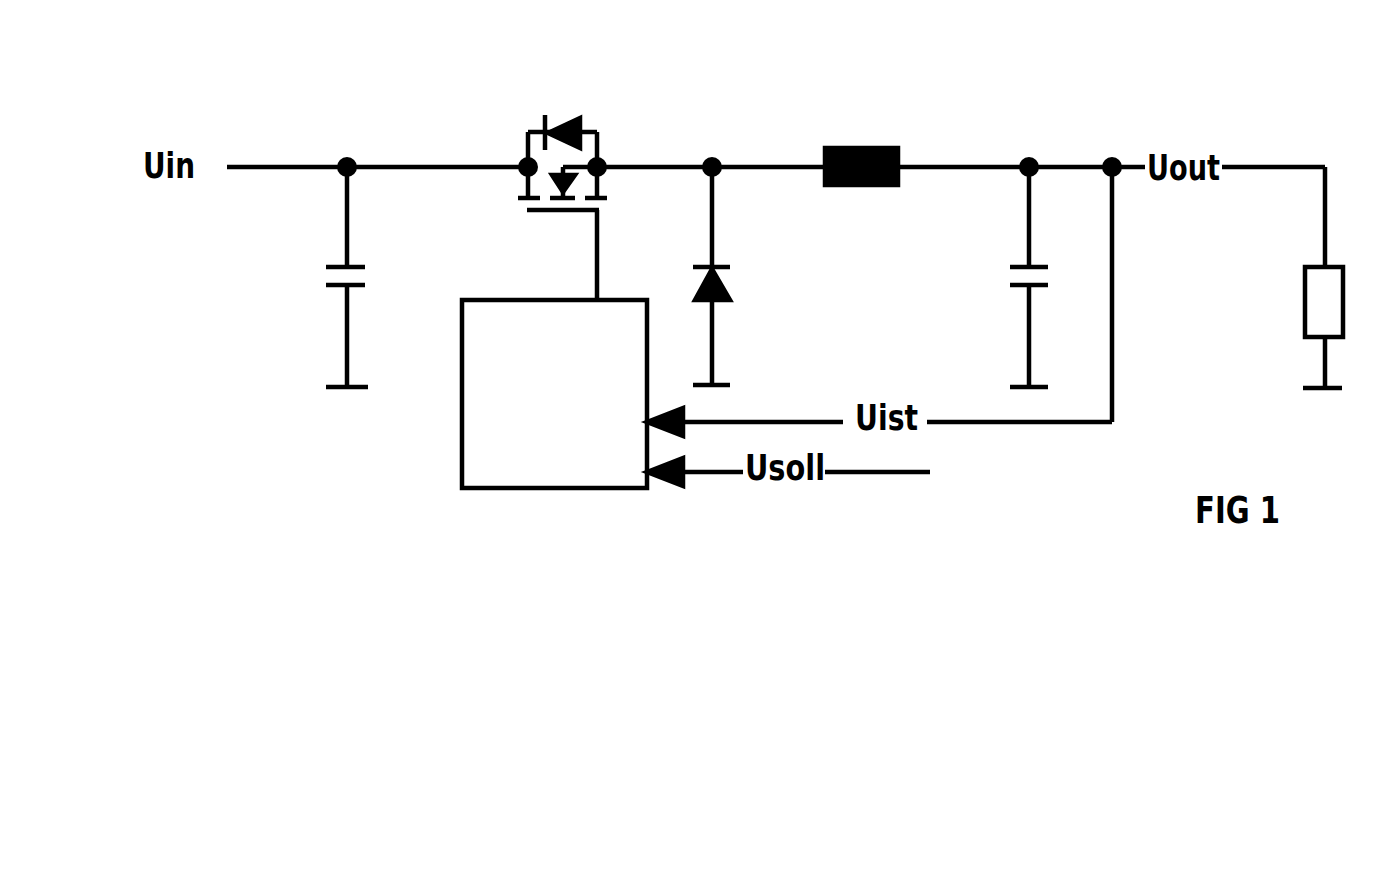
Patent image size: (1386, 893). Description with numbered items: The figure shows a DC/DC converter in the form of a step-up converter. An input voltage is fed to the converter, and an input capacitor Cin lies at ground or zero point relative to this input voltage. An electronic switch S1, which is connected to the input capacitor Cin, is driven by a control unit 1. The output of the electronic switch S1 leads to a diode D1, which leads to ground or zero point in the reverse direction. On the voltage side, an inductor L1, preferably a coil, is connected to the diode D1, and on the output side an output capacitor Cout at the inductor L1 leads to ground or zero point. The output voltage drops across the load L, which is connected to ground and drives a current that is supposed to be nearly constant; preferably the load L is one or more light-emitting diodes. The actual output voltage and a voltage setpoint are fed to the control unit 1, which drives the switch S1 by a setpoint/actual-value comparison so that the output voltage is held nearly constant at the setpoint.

The control unit 1 is at (545, 458).
The electronic switch S1 is at (562, 180).
The diode D1 is at (745, 276).
The inductor L1 is at (861, 141).
The input capacitor Cin is at (312, 277).
The output capacitor Cout is at (989, 277).
The load L is at (1338, 277).